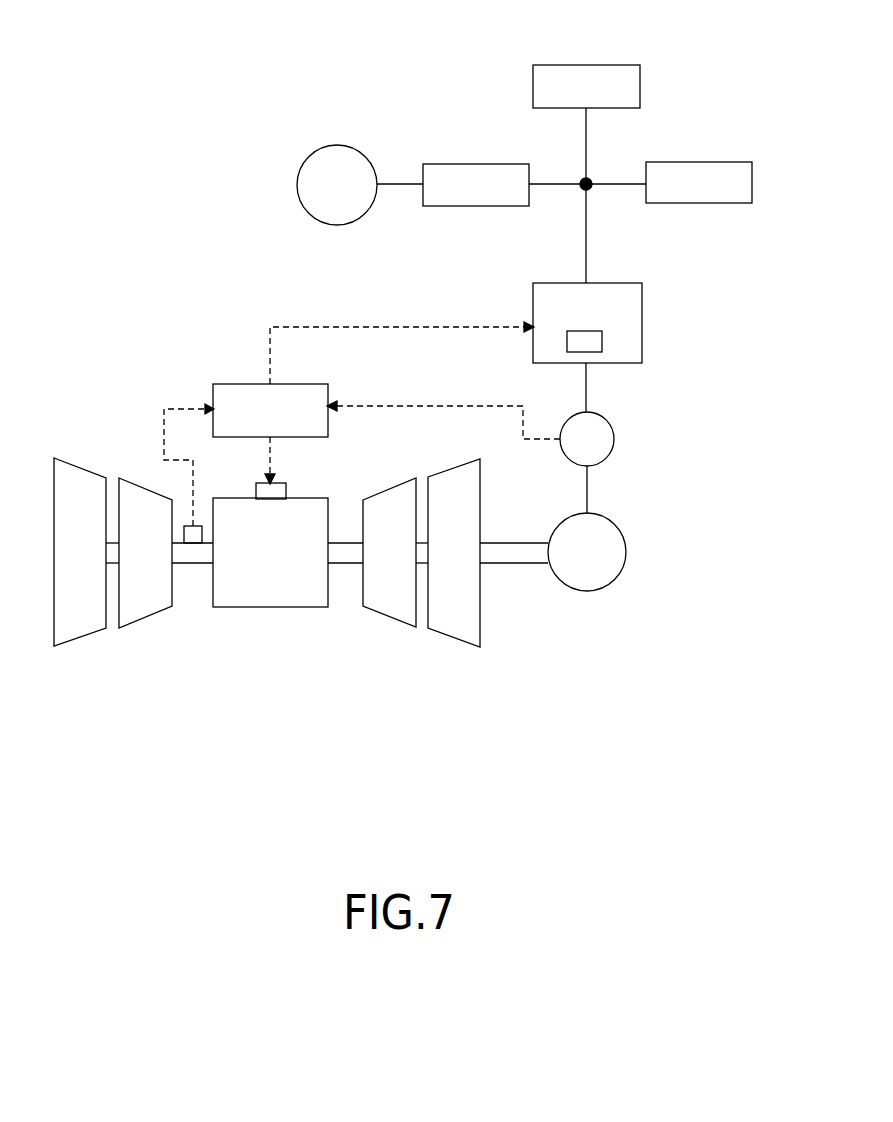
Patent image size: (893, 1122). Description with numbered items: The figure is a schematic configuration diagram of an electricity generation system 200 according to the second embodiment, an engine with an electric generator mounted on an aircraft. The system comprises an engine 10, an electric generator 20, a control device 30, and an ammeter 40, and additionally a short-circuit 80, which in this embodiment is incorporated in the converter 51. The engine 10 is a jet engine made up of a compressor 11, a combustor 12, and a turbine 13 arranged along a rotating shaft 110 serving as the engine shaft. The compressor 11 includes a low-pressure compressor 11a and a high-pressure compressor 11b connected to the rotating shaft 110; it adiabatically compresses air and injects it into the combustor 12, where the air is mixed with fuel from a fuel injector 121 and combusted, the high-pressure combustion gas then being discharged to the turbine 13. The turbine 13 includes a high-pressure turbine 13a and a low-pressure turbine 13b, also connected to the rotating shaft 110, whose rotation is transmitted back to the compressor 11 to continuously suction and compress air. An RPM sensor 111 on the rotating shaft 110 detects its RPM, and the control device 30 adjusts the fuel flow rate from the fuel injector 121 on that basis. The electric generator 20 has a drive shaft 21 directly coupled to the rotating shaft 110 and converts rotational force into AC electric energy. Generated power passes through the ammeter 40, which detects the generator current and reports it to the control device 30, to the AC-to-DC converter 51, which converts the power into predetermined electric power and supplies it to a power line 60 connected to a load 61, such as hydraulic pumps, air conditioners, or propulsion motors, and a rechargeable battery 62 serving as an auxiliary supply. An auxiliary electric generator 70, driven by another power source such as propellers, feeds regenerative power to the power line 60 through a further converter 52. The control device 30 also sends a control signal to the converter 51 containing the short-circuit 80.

The electricity generation system 200 is at (68, 254).
The engine 10 is at (267, 597).
The compressor 11 is at (138, 600).
The low-pressure compressor 11a is at (90, 636).
The high-pressure compressor 11b is at (145, 586).
The rotating shaft 110 is at (187, 567).
The RPM sensor 111 is at (186, 524).
The combustor 12 is at (287, 607).
The fuel injector 121 is at (287, 490).
The turbine 13 is at (421, 600).
The high-pressure turbine 13a is at (382, 618).
The low-pressure turbine 13b is at (454, 576).
The electric generator 20 is at (623, 574).
The drive shaft 21 is at (523, 565).
The control device 30 is at (238, 384).
The ammeter 40 is at (614, 440).
The converter 51 is at (618, 283).
The converter 52 is at (462, 164).
The power line 60 is at (582, 242).
The load 61 is at (627, 64).
The battery 62 is at (715, 162).
The auxiliary electric generator 70 is at (340, 145).
The short-circuit 80 is at (602, 340).